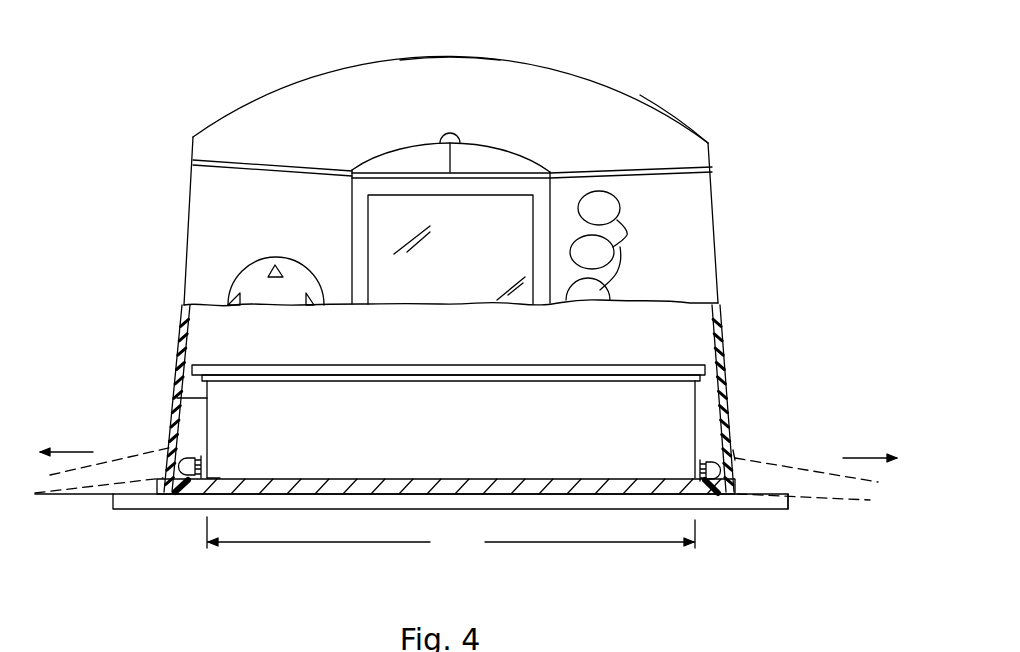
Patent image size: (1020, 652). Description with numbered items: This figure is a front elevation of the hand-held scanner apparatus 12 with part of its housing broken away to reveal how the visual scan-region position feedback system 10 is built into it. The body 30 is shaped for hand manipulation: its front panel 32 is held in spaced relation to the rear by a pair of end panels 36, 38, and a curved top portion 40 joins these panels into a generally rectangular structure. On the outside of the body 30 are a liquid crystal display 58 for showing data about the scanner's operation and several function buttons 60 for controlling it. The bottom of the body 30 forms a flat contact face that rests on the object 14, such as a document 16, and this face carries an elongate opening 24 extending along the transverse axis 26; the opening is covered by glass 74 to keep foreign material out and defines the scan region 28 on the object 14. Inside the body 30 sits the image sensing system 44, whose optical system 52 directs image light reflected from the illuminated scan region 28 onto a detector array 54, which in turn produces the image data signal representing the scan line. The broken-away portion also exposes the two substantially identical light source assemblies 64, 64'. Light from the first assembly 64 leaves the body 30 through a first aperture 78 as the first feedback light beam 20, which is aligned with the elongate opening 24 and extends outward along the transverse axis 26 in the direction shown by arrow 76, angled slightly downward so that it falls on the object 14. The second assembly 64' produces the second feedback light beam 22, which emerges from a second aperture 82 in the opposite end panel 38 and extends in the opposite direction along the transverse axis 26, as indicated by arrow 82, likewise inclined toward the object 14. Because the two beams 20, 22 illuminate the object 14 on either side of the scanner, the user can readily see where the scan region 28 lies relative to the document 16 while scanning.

The visual scan-region position feedback system 10 is at (142, 45).
The scanner apparatus 12 is at (215, 123).
The object 14 is at (162, 510).
The document 16 is at (761, 510).
The first feedback light beam 20 is at (760, 459).
The second feedback light beam 22 is at (158, 448).
The elongate opening 24 is at (208, 477).
The transverse axis 26 is at (70, 494).
The scan region 28 is at (451, 538).
The body 30 is at (685, 120).
The front panel 32 is at (284, 210).
The end panel 36 is at (715, 193).
The end panel 38 is at (188, 202).
The curved top portion 40 is at (409, 56).
The image sensing system 44 is at (275, 362).
The optical system 52 is at (177, 398).
The detector array 54 is at (323, 392).
The liquid crystal display 58 is at (443, 270).
The function buttons 60 is at (450, 143).
The light source assembly 64 is at (672, 448).
The light source assembly 64' is at (218, 438).
The glass 74 is at (537, 479).
The arrow 76 is at (880, 433).
The first aperture 78 is at (734, 457).
The second aperture 82 is at (95, 428).